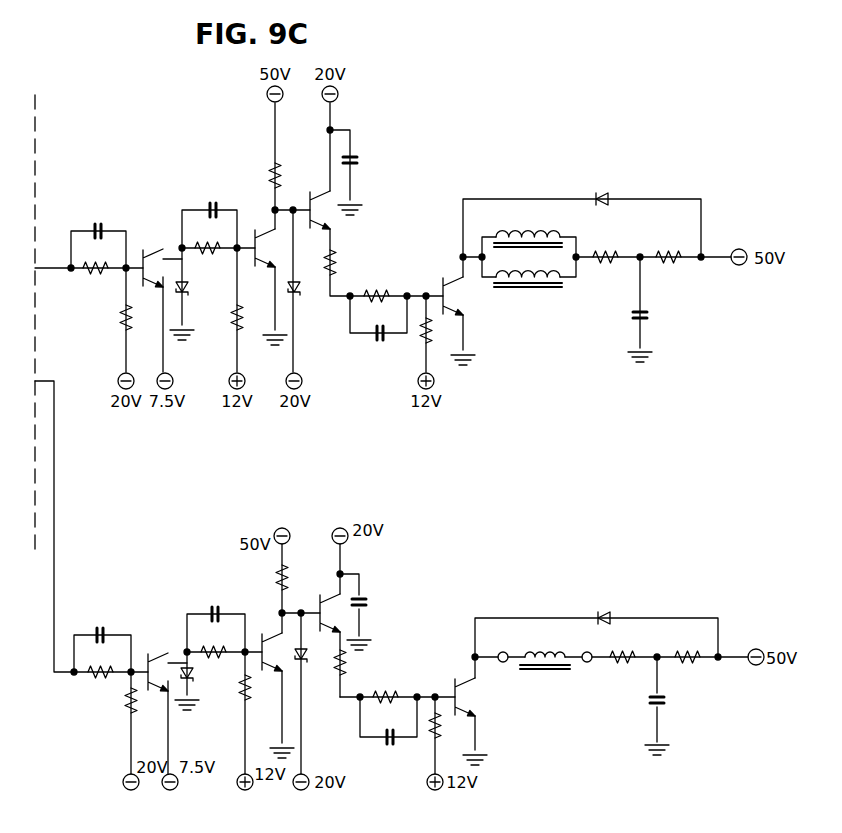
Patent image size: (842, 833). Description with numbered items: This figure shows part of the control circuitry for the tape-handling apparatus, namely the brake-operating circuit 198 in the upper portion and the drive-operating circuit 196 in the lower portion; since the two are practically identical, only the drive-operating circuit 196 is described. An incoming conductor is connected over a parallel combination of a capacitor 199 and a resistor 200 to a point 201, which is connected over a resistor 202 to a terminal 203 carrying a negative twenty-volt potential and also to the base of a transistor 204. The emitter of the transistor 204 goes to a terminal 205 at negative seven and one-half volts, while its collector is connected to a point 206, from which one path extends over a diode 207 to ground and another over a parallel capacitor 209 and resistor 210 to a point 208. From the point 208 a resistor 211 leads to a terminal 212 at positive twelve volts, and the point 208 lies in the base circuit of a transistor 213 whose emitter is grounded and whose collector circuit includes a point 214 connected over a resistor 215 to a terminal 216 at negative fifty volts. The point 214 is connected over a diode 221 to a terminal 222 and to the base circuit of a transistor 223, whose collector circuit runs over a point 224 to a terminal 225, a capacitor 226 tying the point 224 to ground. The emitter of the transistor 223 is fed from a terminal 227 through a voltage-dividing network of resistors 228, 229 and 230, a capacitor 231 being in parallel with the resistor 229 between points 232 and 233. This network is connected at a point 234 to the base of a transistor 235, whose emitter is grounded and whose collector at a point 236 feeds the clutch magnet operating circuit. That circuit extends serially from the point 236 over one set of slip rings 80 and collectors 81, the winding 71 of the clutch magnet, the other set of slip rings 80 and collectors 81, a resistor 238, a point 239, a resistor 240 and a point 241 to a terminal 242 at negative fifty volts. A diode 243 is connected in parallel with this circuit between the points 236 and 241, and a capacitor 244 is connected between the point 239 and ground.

The brake-operating circuit 198 is at (136, 228).
The drive-operating circuit 196 is at (112, 614).
The capacitor 199 is at (96, 633).
The resistor 200 is at (96, 680).
The point 201 is at (128, 680).
The resistor 202 is at (128, 712).
The terminal 203 is at (123, 783).
The transistor 204 is at (148, 654).
The terminal 205 is at (172, 791).
The point 206 is at (186, 650).
The diode 207 is at (190, 690).
The point 208 is at (246, 660).
The capacitor 209 is at (214, 612).
The resistor 210 is at (215, 650).
The resistor 211 is at (243, 685).
The terminal 212 is at (240, 791).
The transistor 213 is at (262, 635).
The point 214 is at (281, 600).
The resistor 215 is at (280, 580).
The terminal 216 is at (276, 531).
The diode 221 is at (303, 662).
The terminal 222 is at (302, 791).
The transistor 223 is at (320, 595).
The point 224 is at (342, 573).
The terminal 225 is at (337, 530).
The capacitor 226 is at (362, 598).
The terminal 227 is at (434, 791).
The resistor 228 is at (344, 668).
The resistor 229 is at (391, 702).
The resistor 230 is at (433, 732).
The capacitor 231 is at (390, 743).
The point 232 is at (360, 700).
The point 233 is at (417, 694).
The point 234 is at (454, 692).
The transistor 235 is at (470, 699).
The point 236 is at (474, 655).
The winding 71 is at (520, 651).
The slip rings 80 is at (507, 662).
The collectors 81 is at (503, 652).
The resistor 238 is at (617, 654).
The point 239 is at (655, 662).
The resistor 240 is at (690, 652).
The point 241 is at (719, 645).
The terminal 242 is at (756, 648).
The diode 243 is at (604, 612).
The capacitor 244 is at (662, 698).